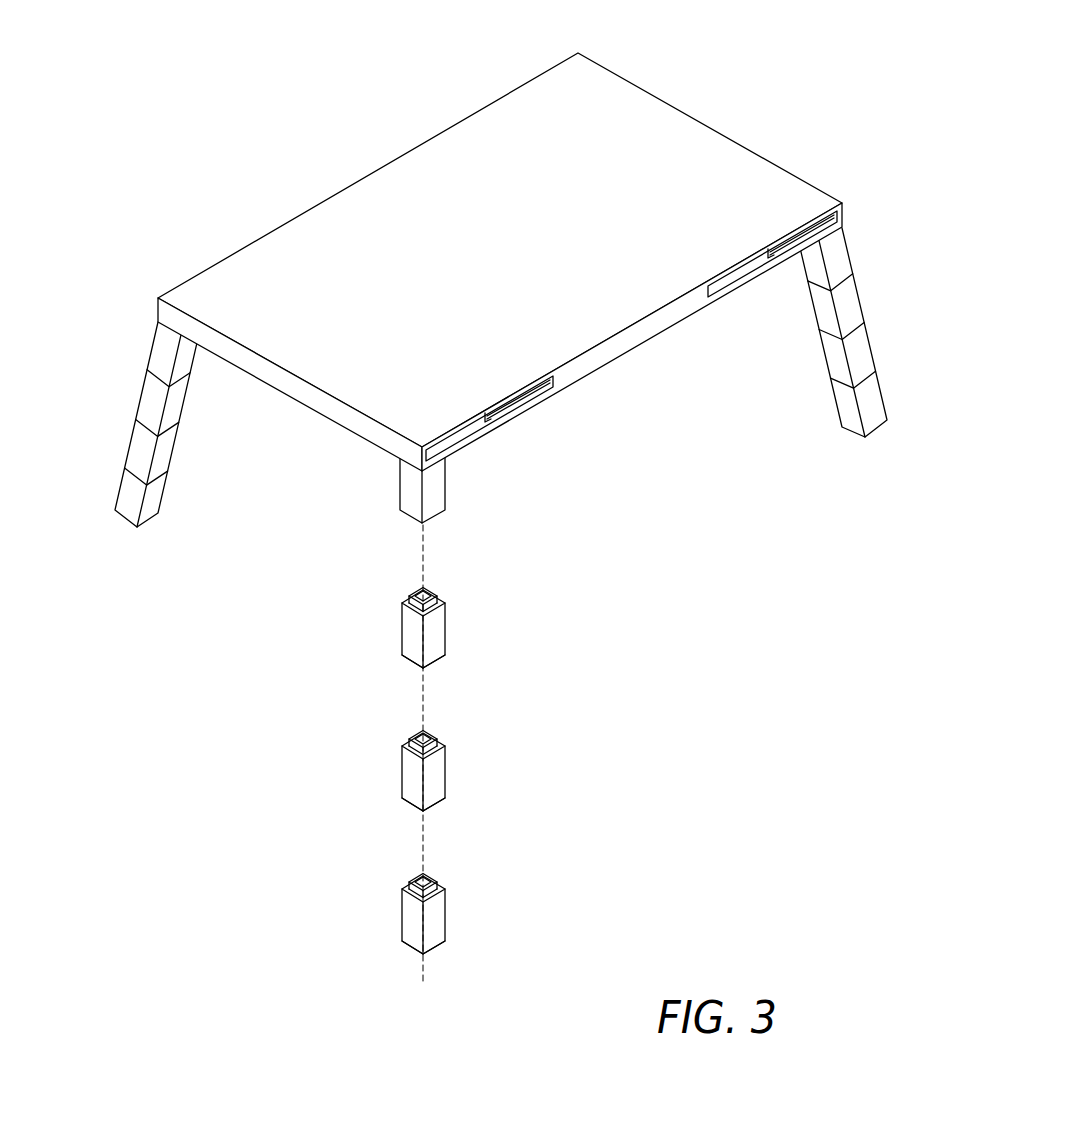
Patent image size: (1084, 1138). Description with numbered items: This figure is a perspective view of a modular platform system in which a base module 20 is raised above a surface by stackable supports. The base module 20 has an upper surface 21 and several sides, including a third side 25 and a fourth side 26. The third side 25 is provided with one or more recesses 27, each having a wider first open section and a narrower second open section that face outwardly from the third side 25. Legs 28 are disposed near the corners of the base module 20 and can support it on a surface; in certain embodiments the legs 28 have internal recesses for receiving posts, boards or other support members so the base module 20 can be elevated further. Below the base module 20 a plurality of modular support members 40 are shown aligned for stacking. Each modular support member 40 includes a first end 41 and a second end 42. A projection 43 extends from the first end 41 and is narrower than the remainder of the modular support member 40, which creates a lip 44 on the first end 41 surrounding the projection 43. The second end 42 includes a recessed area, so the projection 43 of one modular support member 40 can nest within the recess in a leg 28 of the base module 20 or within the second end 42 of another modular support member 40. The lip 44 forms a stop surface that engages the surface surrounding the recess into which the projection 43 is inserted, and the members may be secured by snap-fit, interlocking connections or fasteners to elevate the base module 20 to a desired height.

The base module 20 is at (504, 285).
The upper surface 21 is at (514, 265).
The third side 25 is at (645, 328).
The fourth side 26 is at (283, 387).
The recess 27 is at (483, 465).
The leg 28 is at (163, 349).
The modular support member 40 is at (152, 398).
The first end 41 is at (403, 606).
The second end 42 is at (127, 523).
The projection 43 is at (432, 586).
The lip 44 is at (403, 595).